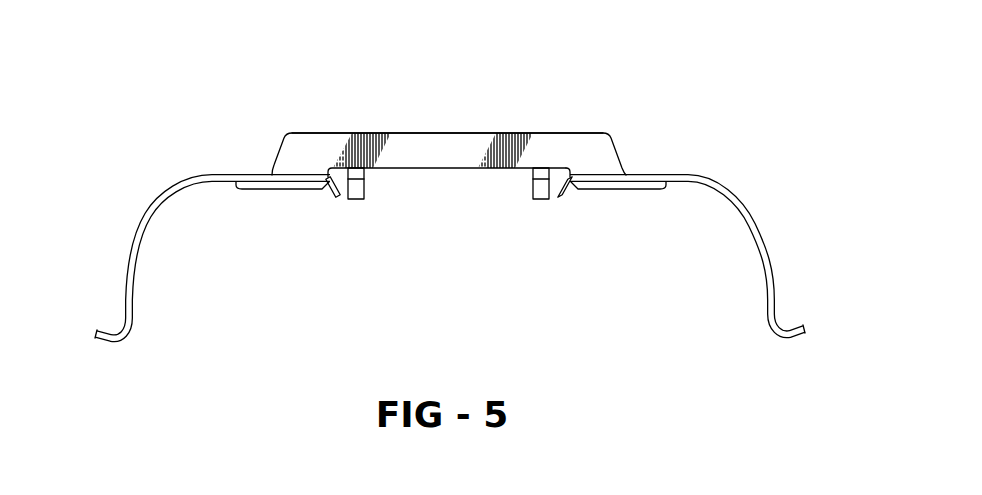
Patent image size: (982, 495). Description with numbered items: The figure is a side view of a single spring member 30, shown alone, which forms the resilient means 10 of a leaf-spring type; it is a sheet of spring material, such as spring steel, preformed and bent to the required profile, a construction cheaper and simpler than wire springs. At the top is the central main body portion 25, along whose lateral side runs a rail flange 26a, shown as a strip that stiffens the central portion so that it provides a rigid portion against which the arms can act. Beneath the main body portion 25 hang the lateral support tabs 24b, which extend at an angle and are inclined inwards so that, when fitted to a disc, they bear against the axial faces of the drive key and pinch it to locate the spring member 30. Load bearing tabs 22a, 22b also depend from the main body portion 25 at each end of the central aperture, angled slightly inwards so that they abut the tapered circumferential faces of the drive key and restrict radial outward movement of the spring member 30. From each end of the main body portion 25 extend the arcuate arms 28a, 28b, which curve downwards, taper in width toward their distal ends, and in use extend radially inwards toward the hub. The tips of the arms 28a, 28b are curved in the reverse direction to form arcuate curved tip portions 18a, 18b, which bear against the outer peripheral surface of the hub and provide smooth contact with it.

The resilient means 10 is at (454, 243).
The spring member 30 is at (429, 158).
The central main body portion 25 is at (442, 133).
The rail flange 26a is at (540, 140).
The arcuate arm 28a is at (145, 222).
The arcuate arm 28b is at (767, 242).
The load bearing tab 22a is at (333, 193).
The load bearing tab 22b is at (573, 195).
The lateral support tab 24b is at (365, 192).
The arcuate curved tip portion 18a is at (102, 343).
The arcuate curved tip portion 18b is at (773, 331).